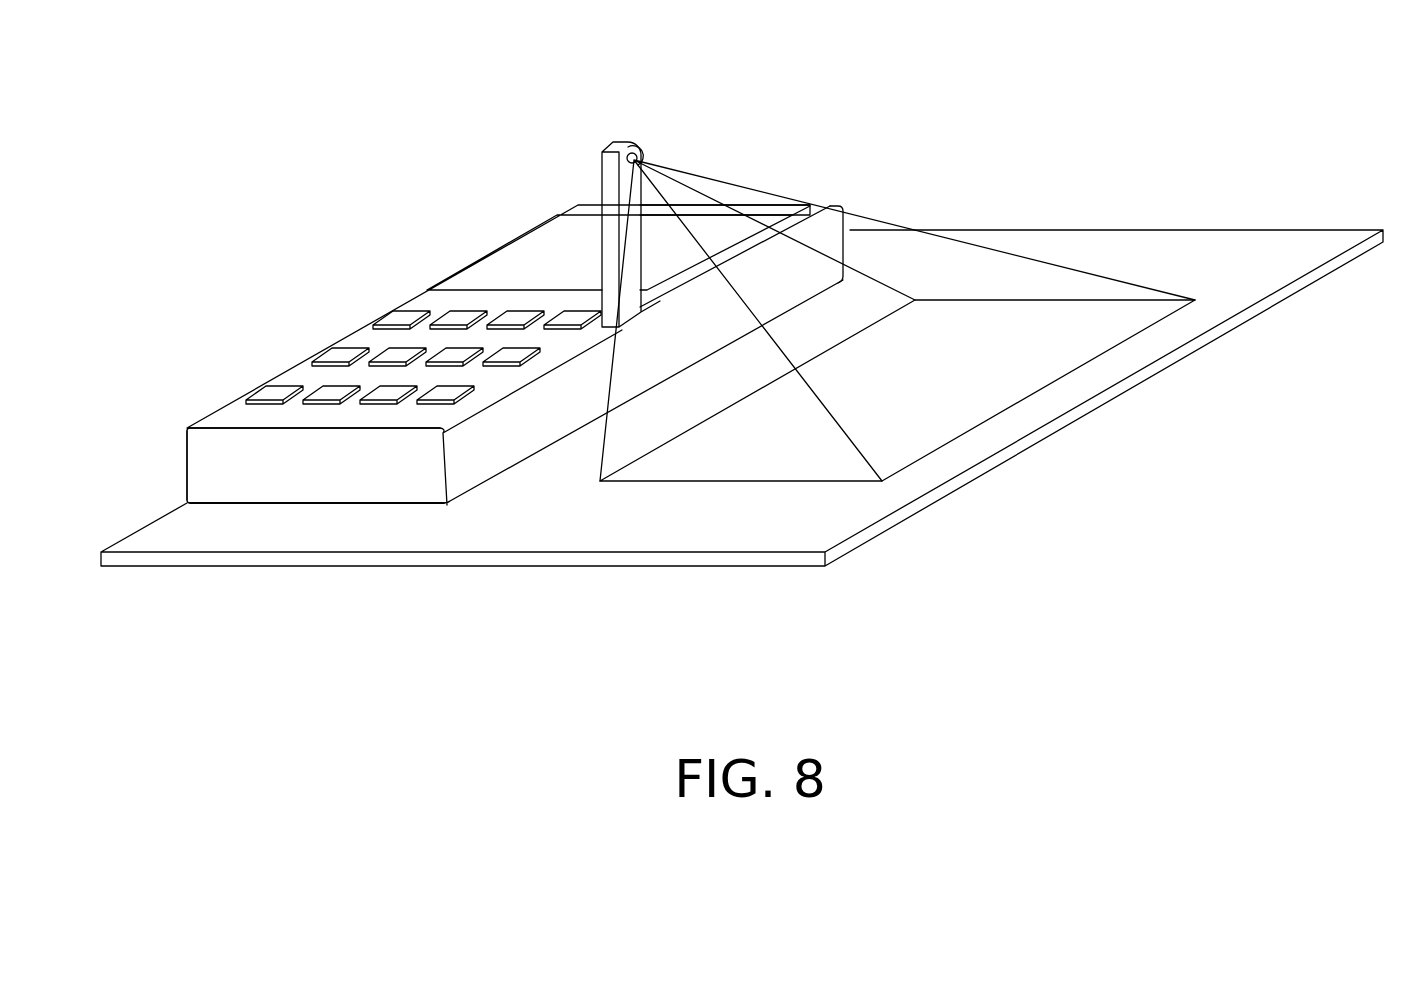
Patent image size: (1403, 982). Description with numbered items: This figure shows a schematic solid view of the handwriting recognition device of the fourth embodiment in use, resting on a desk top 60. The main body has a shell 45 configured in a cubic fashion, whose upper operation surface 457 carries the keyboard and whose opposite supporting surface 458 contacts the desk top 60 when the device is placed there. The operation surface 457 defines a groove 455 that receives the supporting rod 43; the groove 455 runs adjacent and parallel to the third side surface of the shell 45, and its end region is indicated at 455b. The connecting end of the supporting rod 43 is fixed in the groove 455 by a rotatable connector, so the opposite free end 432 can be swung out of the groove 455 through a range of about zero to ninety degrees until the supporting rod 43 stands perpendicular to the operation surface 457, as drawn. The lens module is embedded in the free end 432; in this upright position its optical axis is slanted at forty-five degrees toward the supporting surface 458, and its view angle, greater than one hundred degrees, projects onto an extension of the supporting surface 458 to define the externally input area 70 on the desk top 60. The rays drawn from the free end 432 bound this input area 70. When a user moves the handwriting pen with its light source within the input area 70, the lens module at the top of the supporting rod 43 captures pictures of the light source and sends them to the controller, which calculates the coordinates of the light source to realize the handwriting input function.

The supporting rod 43 is at (598, 198).
The free end 432 is at (612, 163).
The shell 45 is at (226, 413).
The groove 455 is at (790, 218).
The rail end block 455b is at (818, 200).
The operation surface 457 is at (400, 421).
The supporting surface 458 is at (237, 504).
The desk top 60 is at (760, 555).
The externally input area 70 is at (972, 397).